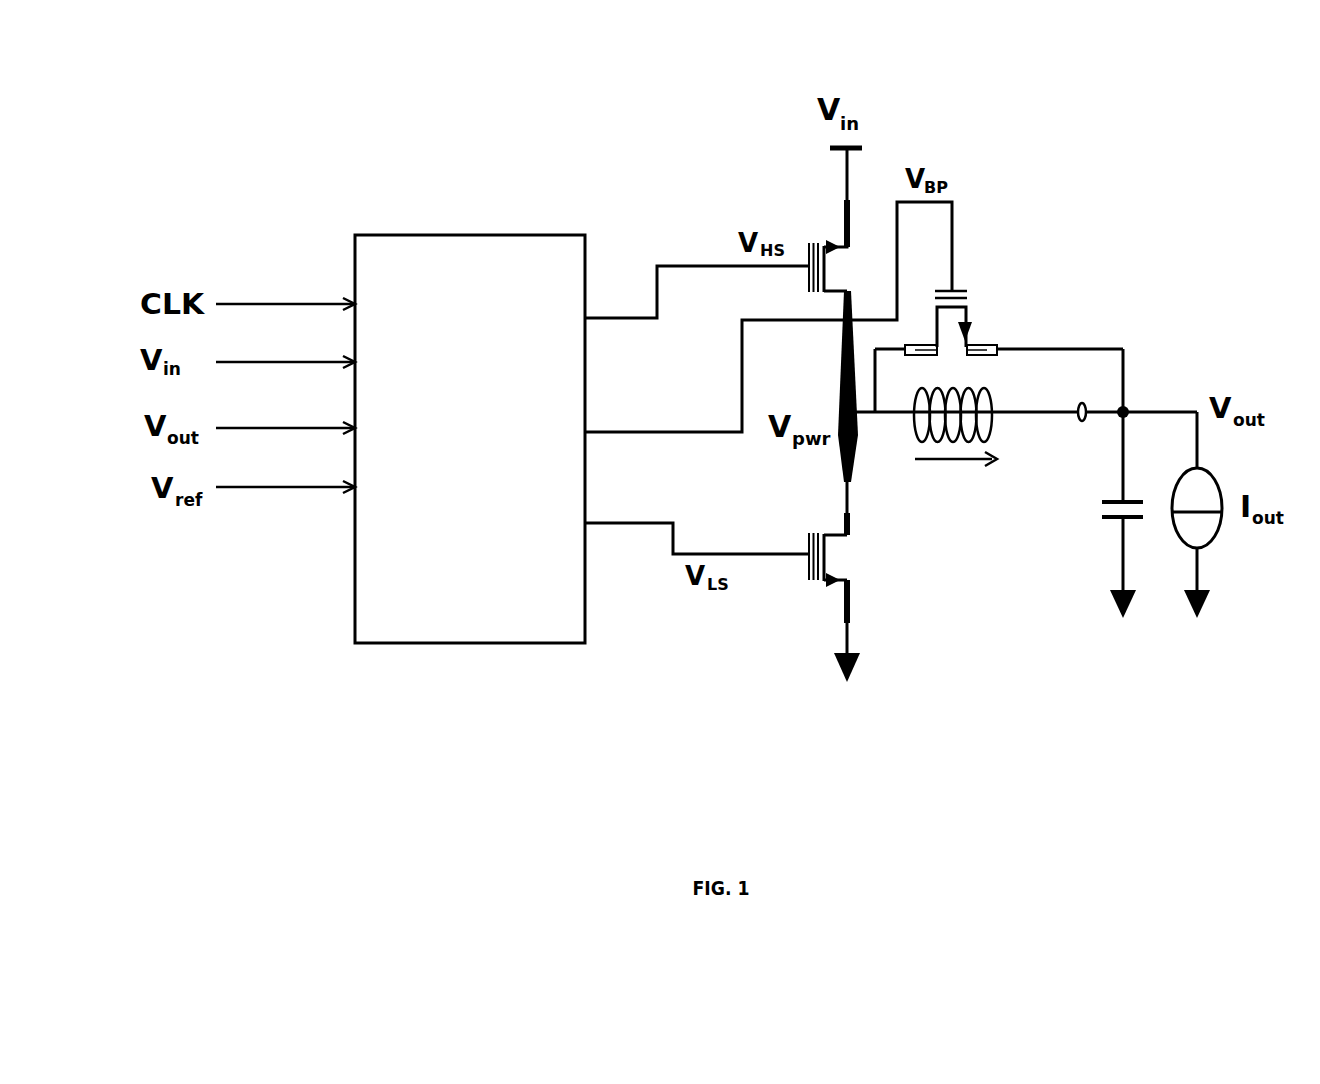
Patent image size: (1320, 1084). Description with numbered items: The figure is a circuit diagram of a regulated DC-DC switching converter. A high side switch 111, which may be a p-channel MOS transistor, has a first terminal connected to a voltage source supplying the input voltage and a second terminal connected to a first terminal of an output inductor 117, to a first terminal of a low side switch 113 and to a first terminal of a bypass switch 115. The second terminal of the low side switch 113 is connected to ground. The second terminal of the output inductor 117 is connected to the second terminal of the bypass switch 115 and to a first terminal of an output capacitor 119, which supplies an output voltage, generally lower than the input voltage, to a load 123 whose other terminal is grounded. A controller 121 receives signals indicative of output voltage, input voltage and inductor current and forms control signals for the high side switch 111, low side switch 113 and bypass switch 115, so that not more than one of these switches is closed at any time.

The high side switch 111 is at (810, 240).
The low side switch 113 is at (808, 537).
The bypass switch 115 is at (962, 290).
The output inductor 117 is at (983, 402).
The output capacitor 119 is at (1110, 522).
The controller 121 is at (1215, 478).
The load 123 is at (472, 234).